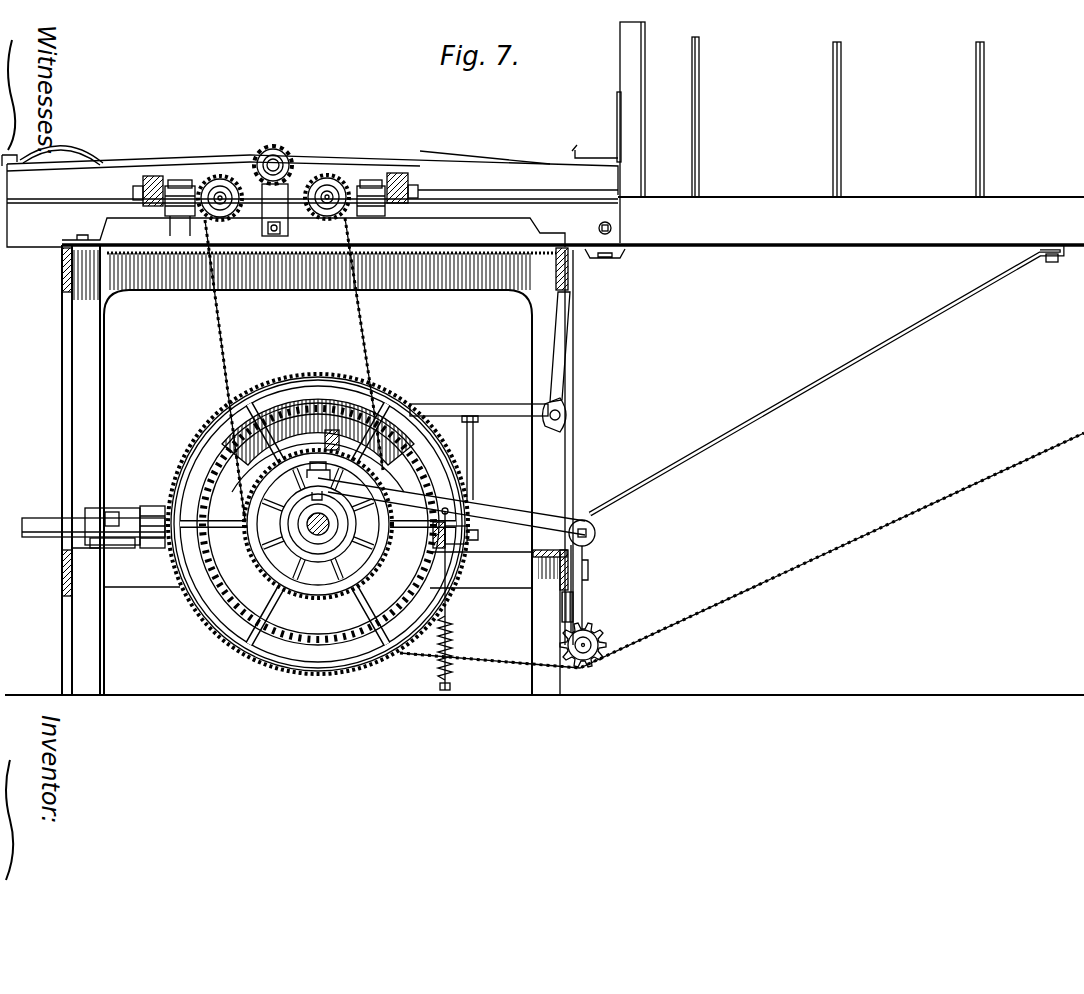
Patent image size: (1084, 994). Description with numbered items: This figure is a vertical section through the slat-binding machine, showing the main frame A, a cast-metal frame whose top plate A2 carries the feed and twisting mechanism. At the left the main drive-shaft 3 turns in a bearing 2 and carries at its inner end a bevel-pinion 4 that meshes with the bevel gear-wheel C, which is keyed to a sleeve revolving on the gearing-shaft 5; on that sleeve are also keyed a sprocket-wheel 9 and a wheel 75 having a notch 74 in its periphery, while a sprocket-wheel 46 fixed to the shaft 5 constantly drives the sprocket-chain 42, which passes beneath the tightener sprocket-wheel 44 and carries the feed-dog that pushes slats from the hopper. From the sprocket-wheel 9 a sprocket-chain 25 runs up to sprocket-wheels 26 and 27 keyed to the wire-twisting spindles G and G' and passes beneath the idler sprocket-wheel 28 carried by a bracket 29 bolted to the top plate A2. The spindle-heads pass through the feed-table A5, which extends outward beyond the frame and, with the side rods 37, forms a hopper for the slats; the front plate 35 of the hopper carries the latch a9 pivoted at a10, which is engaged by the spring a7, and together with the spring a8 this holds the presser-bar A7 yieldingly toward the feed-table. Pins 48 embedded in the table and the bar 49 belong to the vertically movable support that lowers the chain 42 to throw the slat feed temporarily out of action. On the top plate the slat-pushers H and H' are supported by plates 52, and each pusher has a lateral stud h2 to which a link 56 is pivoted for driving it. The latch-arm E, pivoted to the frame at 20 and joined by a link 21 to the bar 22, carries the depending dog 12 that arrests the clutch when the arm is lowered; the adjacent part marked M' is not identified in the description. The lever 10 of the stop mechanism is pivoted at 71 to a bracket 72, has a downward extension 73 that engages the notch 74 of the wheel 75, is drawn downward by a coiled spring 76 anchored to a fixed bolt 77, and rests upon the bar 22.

The spring a8 is at (80, 150).
The spring a7 is at (545, 162).
The latch a9 is at (577, 148).
The pivot of latch a10 is at (615, 128).
The front plate 35 is at (645, 62).
The side rods 37 is at (700, 122).
The main frame A is at (544, 470).
The top plate A2 is at (313, 232).
The feed-table A5 is at (592, 220).
The presser-bar A7 is at (518, 181).
The pins 48 is at (612, 228).
The bar 49 is at (605, 258).
The lateral-projecting stud h2 is at (140, 190).
The link 56 is at (182, 172).
The supporting plates 52 is at (180, 216).
The slat-pusher H' is at (184, 152).
The slat-pusher H is at (391, 141).
The sprocket-wheel 27 is at (226, 178).
The wire-twisting spindle G' is at (213, 158).
The idler sprocket-wheel 28 is at (283, 150).
The sprocket-wheel 26 is at (331, 180).
The wire-twisting spindle G is at (357, 161).
The bracket 29 is at (275, 210).
The sprocket-chain 25 is at (396, 350).
The sprocket-chain 42 is at (990, 474).
The main drive-shaft 3 is at (46, 537).
The bearing 2 is at (130, 512).
The bevel-pinion 4 is at (165, 506).
The bevel gear-wheel C is at (318, 524).
The sprocket-wheel 46 is at (232, 614).
The depending dog 12 is at (326, 420).
The pawl M' is at (349, 422).
The sprocket-wheel 9 is at (318, 524).
The wheel 75 is at (318, 524).
The notch 74 is at (321, 524).
The gearing-shaft 5 is at (332, 523).
The lever 10 is at (488, 504).
The downward extension 73 is at (319, 481).
The pivot 71 is at (596, 533).
The bracket 72 is at (590, 547).
The tightener sprocket-wheel 44 is at (603, 632).
The bar 22 is at (480, 548).
The coiled spring 76 is at (454, 640).
The fixed bolt 77 is at (452, 687).
The latch-arm E is at (442, 404).
The link 21 is at (475, 451).
The pivot 20 is at (562, 415).